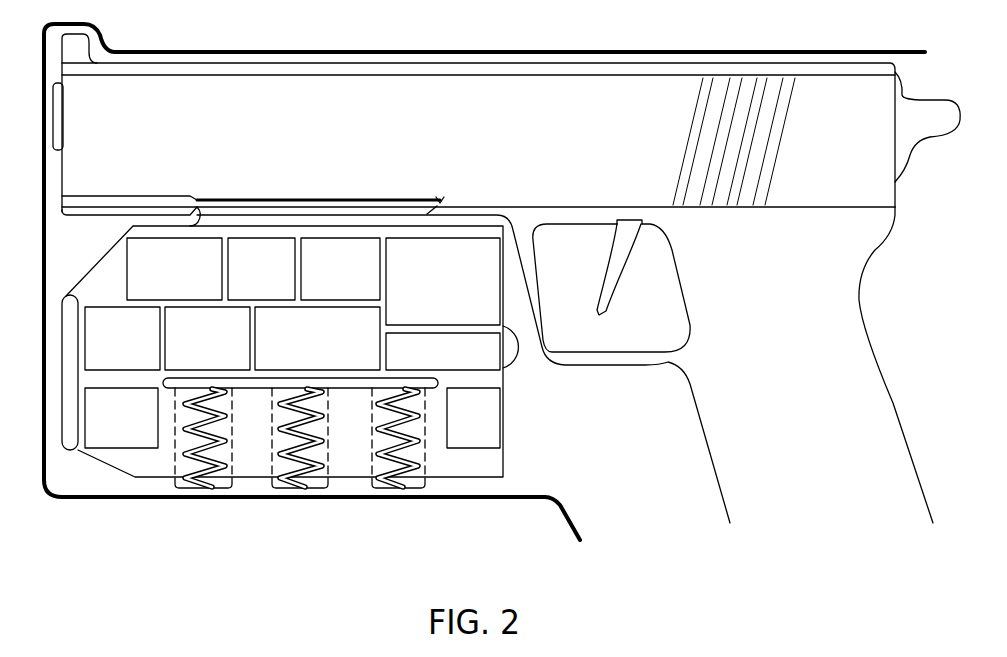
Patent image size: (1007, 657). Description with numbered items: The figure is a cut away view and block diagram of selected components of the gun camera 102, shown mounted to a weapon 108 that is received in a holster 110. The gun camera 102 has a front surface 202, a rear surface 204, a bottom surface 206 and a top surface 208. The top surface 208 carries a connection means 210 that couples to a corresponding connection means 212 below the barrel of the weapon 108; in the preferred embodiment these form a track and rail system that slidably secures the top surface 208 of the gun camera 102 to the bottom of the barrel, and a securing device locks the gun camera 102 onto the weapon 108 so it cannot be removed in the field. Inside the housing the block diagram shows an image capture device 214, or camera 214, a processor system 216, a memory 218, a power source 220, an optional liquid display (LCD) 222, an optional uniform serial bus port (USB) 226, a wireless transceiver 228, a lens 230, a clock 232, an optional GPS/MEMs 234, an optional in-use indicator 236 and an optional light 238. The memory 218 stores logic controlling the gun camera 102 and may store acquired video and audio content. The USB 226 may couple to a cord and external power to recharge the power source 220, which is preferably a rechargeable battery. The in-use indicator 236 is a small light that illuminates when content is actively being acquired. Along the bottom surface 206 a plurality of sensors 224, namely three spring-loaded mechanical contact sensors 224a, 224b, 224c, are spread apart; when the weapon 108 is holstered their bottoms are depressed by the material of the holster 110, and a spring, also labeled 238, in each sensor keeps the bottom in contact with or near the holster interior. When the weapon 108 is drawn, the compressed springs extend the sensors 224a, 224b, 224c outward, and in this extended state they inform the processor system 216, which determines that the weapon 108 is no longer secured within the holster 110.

The gun camera 102 is at (505, 464).
The weapon 108 is at (860, 352).
The holster 110 is at (157, 51).
The front surface 202 is at (55, 433).
The rear surface 204 is at (573, 384).
The bottom surface 206 is at (320, 555).
The top surface 208 is at (323, 193).
The connection means 210 is at (440, 198).
The corresponding connection means 212 is at (120, 200).
The image capture device 214 is at (141, 362).
The processor system 216 is at (368, 362).
The memory 218 is at (359, 294).
The power source 220 is at (490, 361).
The liquid display (LCD) 222 is at (280, 294).
The plurality of sensors 224 is at (317, 481).
The sensor 224a is at (398, 489).
The sensor 224b is at (301, 489).
The sensor 224c is at (204, 489).
The uniform serial bus port (USB) 226 is at (492, 442).
The wireless transceiver 228 is at (462, 321).
The lens 230 is at (67, 295).
The clock 232 is at (226, 362).
The global positioning system/micro-electromechanical system (GPS/MEMs) 234 is at (193, 294).
The in-use indicator 236 is at (513, 347).
The light 238 is at (140, 442).